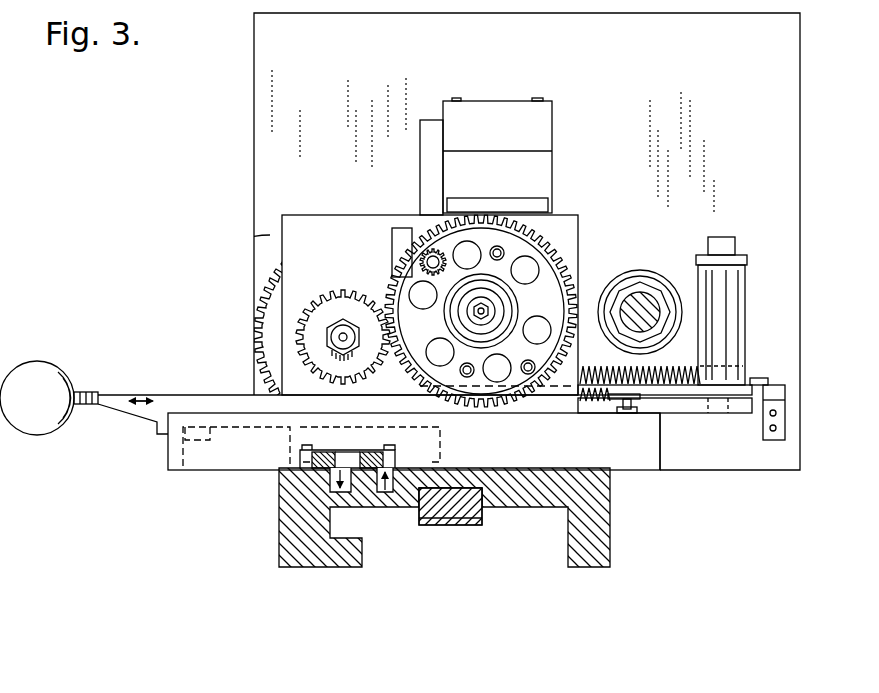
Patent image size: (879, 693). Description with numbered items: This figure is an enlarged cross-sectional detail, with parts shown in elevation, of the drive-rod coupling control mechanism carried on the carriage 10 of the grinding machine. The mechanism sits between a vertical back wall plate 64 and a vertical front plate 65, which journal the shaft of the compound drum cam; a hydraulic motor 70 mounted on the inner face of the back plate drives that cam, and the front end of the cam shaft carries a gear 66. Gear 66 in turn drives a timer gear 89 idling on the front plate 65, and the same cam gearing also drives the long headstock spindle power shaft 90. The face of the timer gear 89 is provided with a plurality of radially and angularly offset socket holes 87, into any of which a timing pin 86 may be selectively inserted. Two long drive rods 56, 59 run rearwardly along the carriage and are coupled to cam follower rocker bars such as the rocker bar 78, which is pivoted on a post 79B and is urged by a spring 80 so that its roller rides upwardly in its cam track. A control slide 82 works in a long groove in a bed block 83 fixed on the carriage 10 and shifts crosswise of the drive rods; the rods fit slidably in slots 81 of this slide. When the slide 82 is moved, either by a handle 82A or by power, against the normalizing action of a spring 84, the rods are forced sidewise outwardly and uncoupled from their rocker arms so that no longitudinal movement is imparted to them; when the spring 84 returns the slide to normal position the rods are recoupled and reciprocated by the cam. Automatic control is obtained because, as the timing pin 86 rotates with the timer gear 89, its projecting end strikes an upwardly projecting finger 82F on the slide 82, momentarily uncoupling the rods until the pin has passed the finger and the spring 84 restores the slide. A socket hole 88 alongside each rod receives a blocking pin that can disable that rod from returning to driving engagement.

The carriage 10 is at (279, 511).
The drive rod 56 is at (384, 462).
The drive rod 59 is at (286, 458).
The back wall plate 64 is at (553, 59).
The front plate 65 is at (326, 251).
The gear 66 is at (332, 316).
The hydraulic motor 70 is at (522, 184).
The rocker bar 78 is at (684, 398).
The post 79B is at (746, 293).
The spring 80 is at (676, 372).
The slots 81 is at (384, 448).
The control slide 82 is at (170, 397).
The handle 82A is at (30, 407).
The finger 82F is at (401, 238).
The bed block 83 is at (188, 458).
The spring 84 is at (598, 405).
The timing pin 86 is at (430, 250).
The socket holes 87 is at (506, 255).
The socket hole 88 is at (384, 496).
The timer gear 89 is at (552, 306).
The headstock spindle power shaft 90 is at (640, 300).